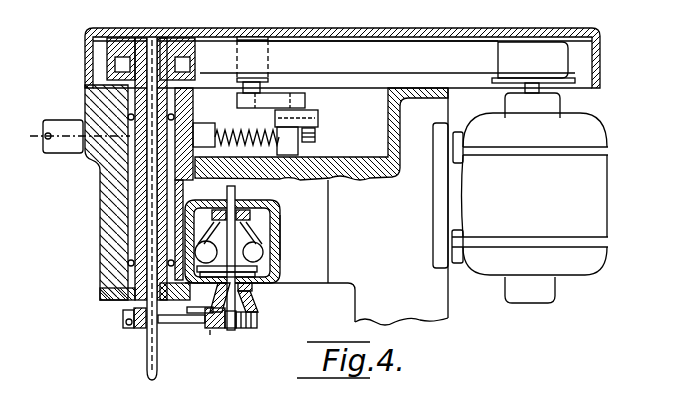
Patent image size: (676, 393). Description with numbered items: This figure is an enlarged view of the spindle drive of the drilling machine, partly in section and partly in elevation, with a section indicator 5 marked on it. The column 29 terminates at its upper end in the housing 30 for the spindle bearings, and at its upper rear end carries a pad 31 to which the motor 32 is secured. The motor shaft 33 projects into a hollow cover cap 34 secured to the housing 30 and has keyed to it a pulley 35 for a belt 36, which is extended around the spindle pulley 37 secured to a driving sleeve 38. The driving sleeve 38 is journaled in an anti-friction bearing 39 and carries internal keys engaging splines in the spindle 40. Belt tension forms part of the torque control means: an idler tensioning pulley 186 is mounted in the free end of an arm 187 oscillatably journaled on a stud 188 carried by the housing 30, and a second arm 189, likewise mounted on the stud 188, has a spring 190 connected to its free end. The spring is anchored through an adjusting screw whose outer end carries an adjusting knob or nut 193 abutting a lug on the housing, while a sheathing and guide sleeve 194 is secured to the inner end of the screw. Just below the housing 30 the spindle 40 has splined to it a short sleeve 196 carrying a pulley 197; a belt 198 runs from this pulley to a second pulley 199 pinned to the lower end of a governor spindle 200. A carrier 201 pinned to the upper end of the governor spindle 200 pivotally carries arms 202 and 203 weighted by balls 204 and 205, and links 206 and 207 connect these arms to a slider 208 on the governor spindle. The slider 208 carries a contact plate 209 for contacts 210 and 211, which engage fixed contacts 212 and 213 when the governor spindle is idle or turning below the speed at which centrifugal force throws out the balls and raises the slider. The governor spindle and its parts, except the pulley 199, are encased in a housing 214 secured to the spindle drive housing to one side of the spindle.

The section line 5- 5 is at (50, 129).
The column 29 is at (432, 313).
The housing 30 is at (105, 212).
The pad 31 is at (450, 270).
The motor 32 is at (590, 221).
The motor shaft 33 is at (558, 91).
The hollow cover cap 34 is at (483, 10).
The pulley 35 is at (538, 52).
The belt 36 is at (364, 50).
The spindle pulley 37 is at (118, 55).
The driving sleeve 38 is at (157, 46).
The anti-friction bearing 39 is at (225, 102).
The spindle 40 is at (156, 352).
The idler tensioning pulley 186 is at (270, 78).
The arm 187 is at (260, 109).
The stud 188 is at (300, 150).
The arm 189 is at (302, 118).
The spring 190 is at (247, 130).
The adjusting knob or nut 193 is at (64, 150).
The sheathing and guide sleeve 194 is at (212, 146).
The short sleeve 196 is at (143, 333).
The pulley 197 is at (133, 328).
The belt 198 is at (188, 325).
The second pulley 199 is at (245, 328).
The governor spindle 200 is at (227, 328).
The carrier 201 is at (252, 208).
The arm 202 is at (211, 215).
The arm 203 is at (252, 217).
The ball 204 is at (227, 233).
The ball 205 is at (277, 238).
The link 206 is at (218, 206).
The link 207 is at (265, 250).
The slider 208 is at (257, 268).
The contact plate 209 is at (252, 290).
The contact 210 is at (208, 298).
The contact 211 is at (255, 278).
The fixed contact 212 is at (210, 334).
The fixed contact 213 is at (262, 287).
The housing 214 is at (281, 236).